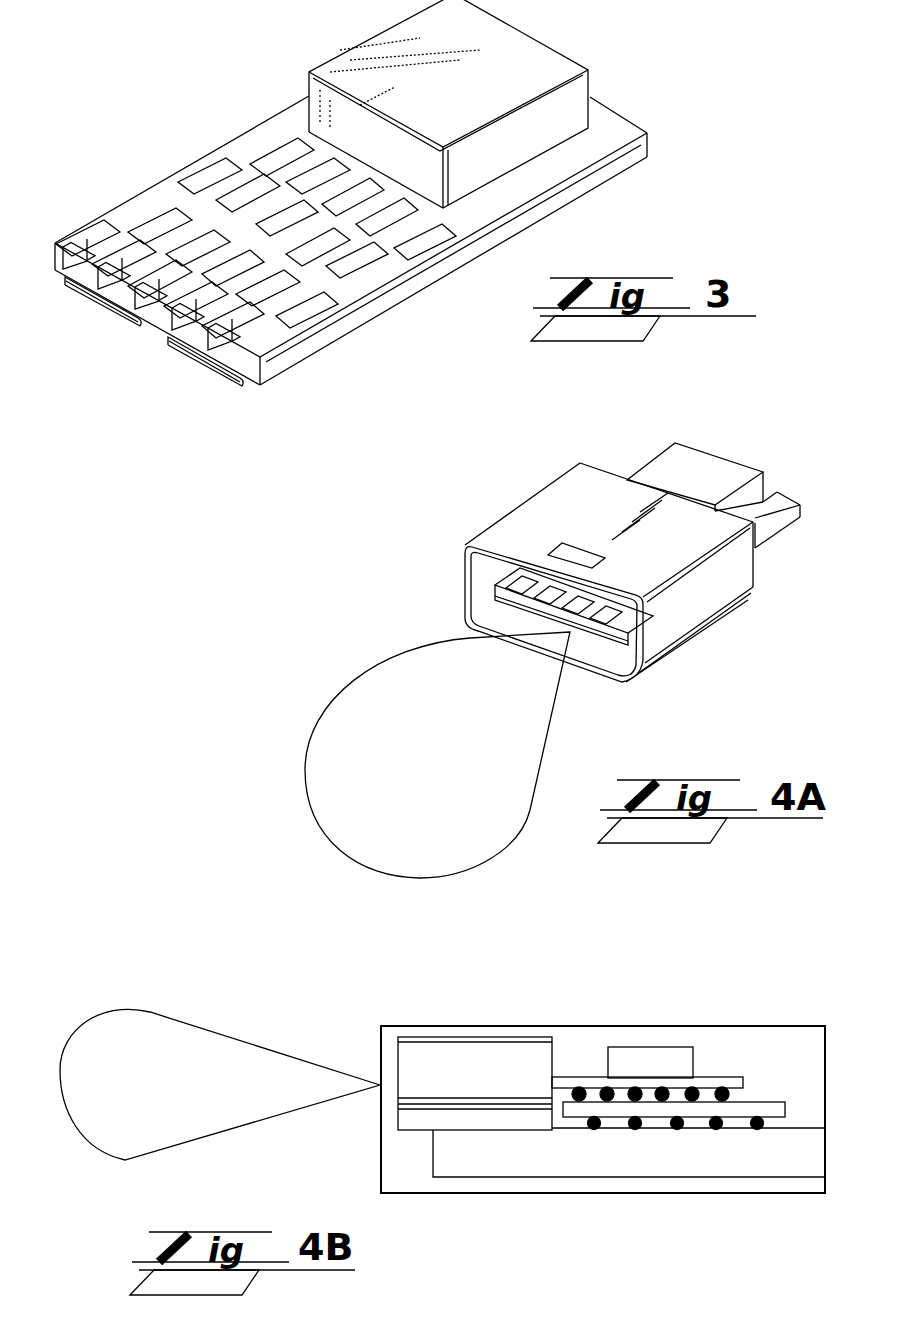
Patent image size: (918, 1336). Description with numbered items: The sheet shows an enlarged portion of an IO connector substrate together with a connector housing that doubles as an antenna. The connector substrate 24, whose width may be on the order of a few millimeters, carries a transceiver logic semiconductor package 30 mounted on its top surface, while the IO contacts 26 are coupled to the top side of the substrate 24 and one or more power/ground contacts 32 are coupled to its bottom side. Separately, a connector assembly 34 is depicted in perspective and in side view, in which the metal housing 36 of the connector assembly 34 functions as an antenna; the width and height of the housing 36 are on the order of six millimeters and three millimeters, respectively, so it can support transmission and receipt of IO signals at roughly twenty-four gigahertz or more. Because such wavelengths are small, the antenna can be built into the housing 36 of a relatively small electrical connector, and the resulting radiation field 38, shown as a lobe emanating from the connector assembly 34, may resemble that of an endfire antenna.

In FIG. 3, the substrate 24 is at (603, 190).
In FIG. 3, the IO contacts 26 is at (361, 352).
In FIG. 3, the transceiver logic semiconductor package 30 is at (517, 28).
In FIG. 3, the power/ground contacts 32 is at (247, 408).
In FIG. 4A, the connector assembly 34 is at (653, 533).
In FIG. 4B, the connector assembly 34 is at (627, 982).
In FIG. 4A, the metal housing 36 is at (682, 636).
In FIG. 4A, the radiation field 38 is at (328, 690).
In FIG. 4B, the radiation field 38 is at (183, 1020).